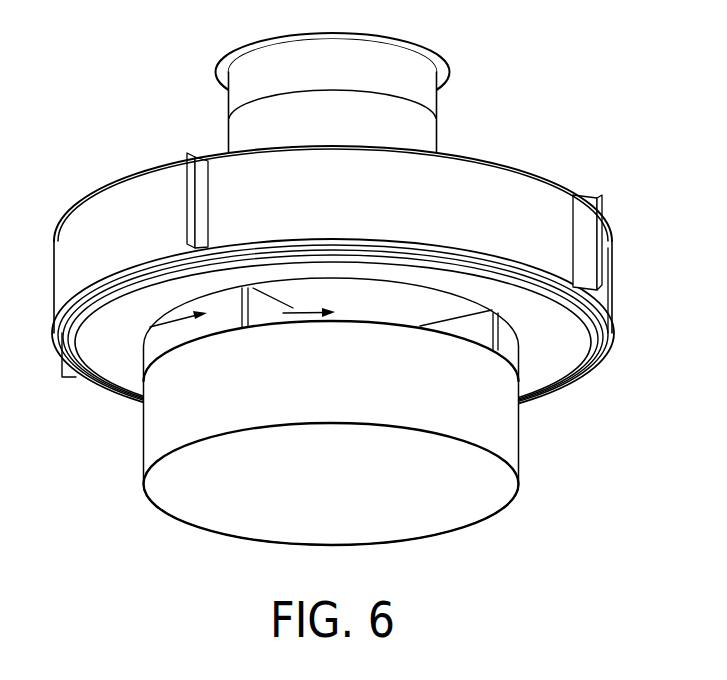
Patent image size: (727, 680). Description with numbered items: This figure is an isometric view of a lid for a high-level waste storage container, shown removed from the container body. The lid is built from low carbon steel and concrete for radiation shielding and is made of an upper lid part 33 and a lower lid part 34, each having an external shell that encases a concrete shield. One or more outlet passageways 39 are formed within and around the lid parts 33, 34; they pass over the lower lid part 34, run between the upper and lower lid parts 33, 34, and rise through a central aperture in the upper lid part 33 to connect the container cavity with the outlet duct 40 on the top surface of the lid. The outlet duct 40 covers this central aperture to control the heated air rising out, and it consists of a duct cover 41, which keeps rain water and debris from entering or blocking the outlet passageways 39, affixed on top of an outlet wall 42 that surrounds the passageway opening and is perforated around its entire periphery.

The upper lid part 33 is at (547, 176).
The lower lid part 34 is at (513, 457).
The outlet passageways 39 is at (238, 329).
The outlet duct 40 is at (230, 118).
The duct cover 41 is at (437, 62).
The outlet wall 42 is at (439, 104).